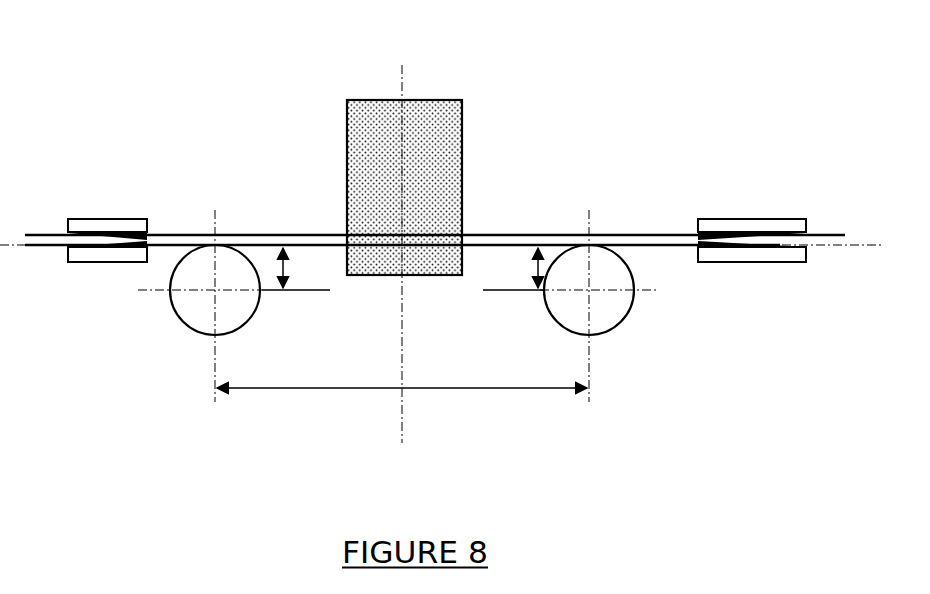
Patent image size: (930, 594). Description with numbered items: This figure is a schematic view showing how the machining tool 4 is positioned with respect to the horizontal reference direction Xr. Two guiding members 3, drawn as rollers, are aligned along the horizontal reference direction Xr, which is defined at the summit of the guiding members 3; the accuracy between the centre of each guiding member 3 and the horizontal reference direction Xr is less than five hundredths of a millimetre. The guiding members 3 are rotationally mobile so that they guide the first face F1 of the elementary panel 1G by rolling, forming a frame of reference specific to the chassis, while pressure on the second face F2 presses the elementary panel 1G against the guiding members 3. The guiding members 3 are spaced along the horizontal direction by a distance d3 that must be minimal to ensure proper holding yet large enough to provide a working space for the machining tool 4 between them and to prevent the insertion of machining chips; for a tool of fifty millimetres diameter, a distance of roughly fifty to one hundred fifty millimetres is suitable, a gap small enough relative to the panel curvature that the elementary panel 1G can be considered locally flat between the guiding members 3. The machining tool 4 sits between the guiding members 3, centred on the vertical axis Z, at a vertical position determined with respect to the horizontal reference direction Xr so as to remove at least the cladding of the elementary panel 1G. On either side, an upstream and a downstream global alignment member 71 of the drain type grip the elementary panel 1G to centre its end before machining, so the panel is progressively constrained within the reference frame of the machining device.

The global alignment member 71 is at (100, 219).
The machining tool 4 is at (456, 100).
The guiding member 3 is at (184, 326).
The elementary panel 1G is at (261, 222).
The first face F1 is at (665, 248).
The second face F2 is at (177, 235).
The vertical axis Z is at (400, 240).
The horizontal reference direction Xr is at (441, 261).
The distance d3 is at (518, 391).